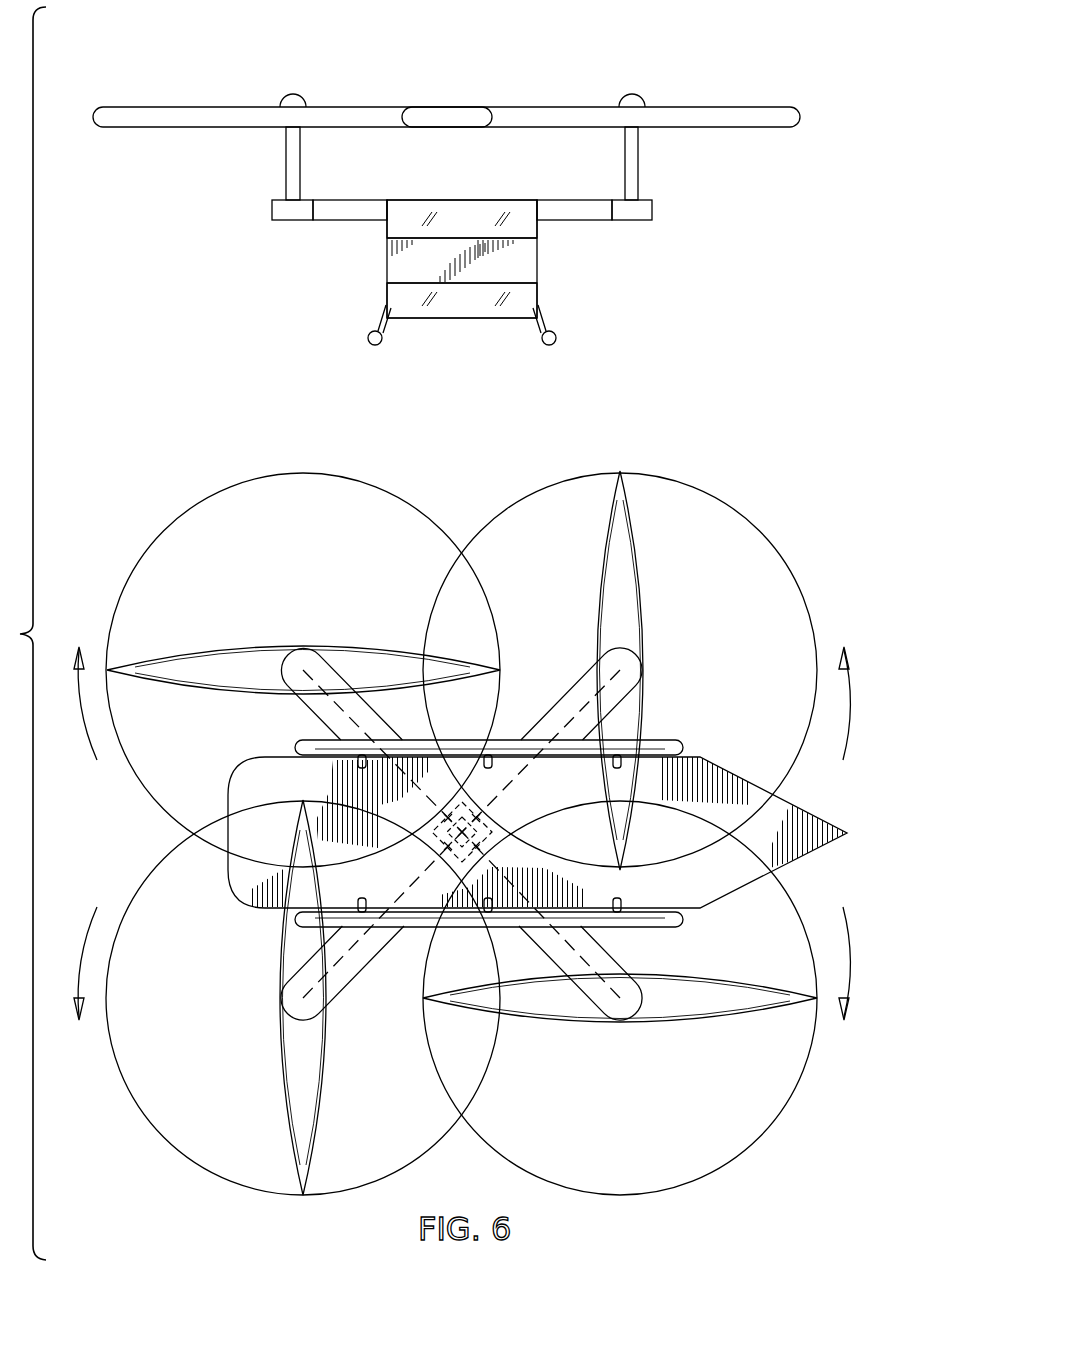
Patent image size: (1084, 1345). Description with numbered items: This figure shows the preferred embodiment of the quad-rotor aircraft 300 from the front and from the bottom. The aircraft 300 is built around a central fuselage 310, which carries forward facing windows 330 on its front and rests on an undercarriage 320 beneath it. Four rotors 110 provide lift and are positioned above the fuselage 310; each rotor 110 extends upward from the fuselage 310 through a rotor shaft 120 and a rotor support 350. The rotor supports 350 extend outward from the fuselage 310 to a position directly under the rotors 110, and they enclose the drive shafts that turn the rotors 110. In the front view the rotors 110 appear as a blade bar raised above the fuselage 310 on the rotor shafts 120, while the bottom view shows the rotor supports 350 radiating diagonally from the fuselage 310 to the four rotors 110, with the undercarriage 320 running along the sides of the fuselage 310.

The quad-rotor aircraft 300 is at (800, 92).
The rotors 110 is at (178, 108).
The rotor shafts 120 is at (286, 163).
The rotor supports 350 is at (272, 212).
The fuselage 310 is at (397, 268).
The undercarriage 320 is at (557, 337).
The forward facing windows 330 is at (478, 212).